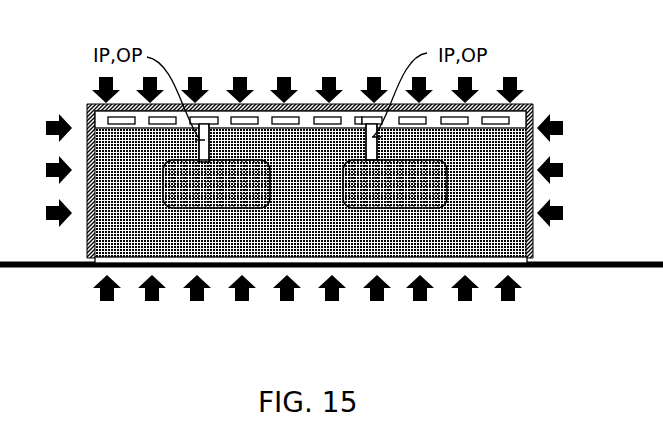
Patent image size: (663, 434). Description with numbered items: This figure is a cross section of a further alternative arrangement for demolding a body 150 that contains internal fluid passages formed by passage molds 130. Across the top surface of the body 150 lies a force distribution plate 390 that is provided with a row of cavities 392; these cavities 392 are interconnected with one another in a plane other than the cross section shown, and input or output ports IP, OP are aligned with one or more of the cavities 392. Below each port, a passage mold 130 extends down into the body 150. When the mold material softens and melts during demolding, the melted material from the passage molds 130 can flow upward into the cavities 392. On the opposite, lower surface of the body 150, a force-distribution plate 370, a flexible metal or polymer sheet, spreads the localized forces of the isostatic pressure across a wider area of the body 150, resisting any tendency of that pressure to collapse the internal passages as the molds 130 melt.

The passage mold 130 is at (372, 183).
The body 150 is at (467, 235).
The force-distribution plate 370 is at (138, 258).
The force distribution plate with cavities 390 is at (518, 120).
The cavities 392 is at (362, 118).